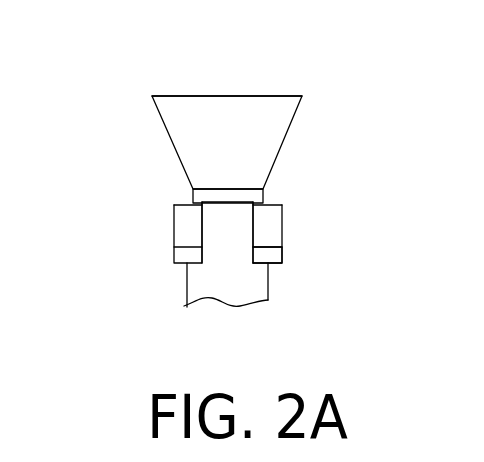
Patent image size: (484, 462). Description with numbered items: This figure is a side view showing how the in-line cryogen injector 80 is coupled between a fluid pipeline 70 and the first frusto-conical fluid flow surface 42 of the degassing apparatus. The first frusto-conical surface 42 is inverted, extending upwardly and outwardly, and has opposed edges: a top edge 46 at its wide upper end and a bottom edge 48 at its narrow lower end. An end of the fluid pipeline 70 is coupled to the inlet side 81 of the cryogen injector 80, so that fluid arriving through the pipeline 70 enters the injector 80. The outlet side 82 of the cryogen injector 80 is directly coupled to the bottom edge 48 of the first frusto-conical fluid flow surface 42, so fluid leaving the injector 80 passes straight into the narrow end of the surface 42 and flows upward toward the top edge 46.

The first frusto-conical surface 42 is at (169, 133).
The top edge 46 is at (233, 95).
The bottom edge 48 is at (263, 190).
The outlet side 82 is at (193, 197).
The cryogen injector 80 is at (253, 228).
The inlet side 81 is at (279, 263).
The fluid pipeline 70 is at (188, 290).